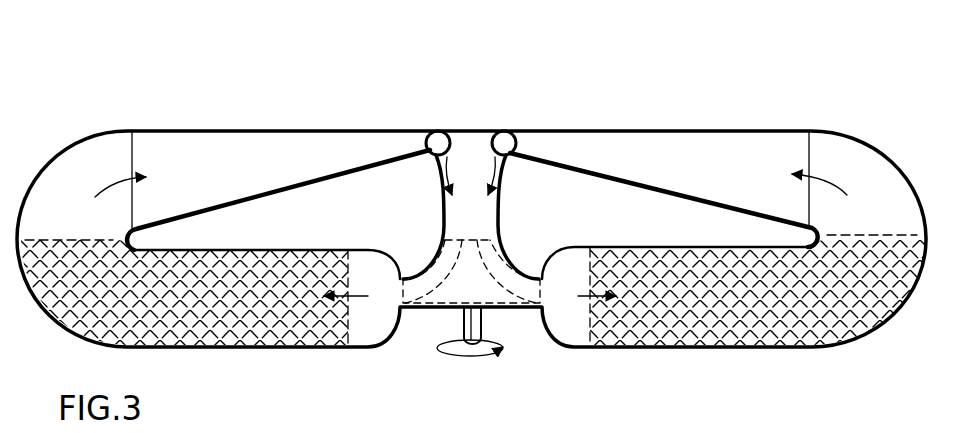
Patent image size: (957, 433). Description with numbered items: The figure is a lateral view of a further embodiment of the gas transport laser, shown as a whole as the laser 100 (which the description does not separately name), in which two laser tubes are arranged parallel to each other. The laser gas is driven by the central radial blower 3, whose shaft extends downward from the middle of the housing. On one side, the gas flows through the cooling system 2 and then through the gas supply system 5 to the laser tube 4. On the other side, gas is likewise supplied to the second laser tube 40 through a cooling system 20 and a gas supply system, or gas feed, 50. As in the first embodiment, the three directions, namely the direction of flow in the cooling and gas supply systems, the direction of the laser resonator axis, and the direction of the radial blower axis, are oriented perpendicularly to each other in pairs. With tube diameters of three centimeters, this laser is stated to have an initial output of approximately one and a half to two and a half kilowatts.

The mixing device 100 is at (798, 116).
The gas supply system 5 is at (253, 148).
The gas supply system 50 is at (690, 155).
The laser tube 4 is at (440, 131).
The laser tube 40 is at (507, 131).
The cooling system 2 is at (228, 313).
The cooling system 20 is at (715, 305).
The radial blower 3 is at (443, 290).